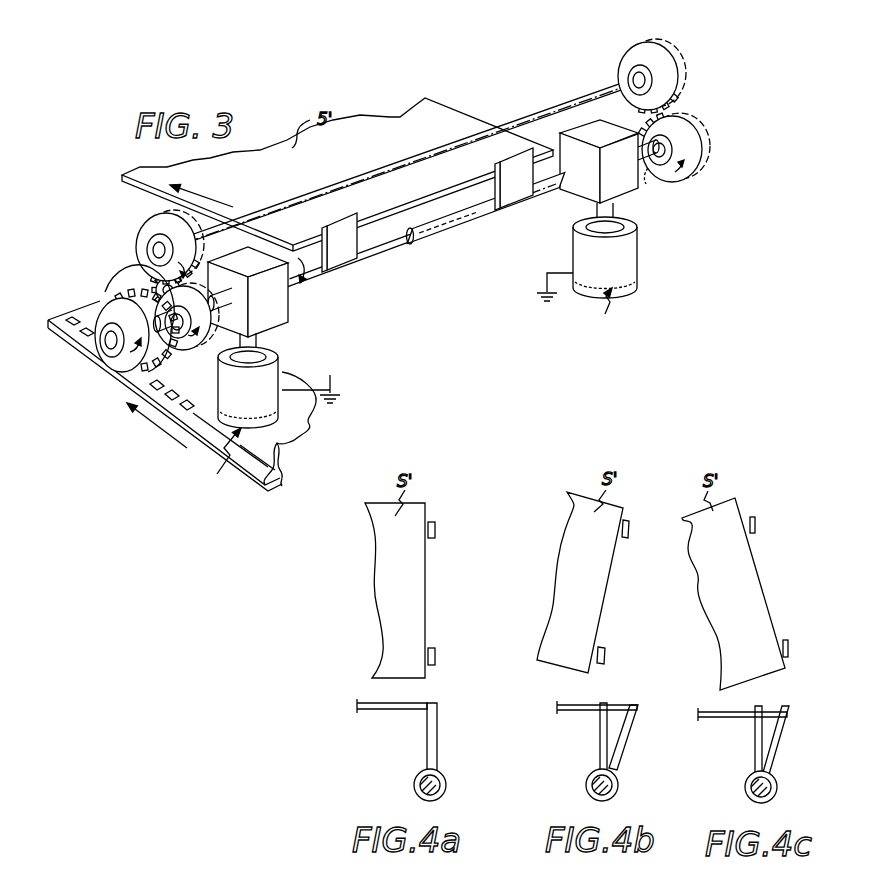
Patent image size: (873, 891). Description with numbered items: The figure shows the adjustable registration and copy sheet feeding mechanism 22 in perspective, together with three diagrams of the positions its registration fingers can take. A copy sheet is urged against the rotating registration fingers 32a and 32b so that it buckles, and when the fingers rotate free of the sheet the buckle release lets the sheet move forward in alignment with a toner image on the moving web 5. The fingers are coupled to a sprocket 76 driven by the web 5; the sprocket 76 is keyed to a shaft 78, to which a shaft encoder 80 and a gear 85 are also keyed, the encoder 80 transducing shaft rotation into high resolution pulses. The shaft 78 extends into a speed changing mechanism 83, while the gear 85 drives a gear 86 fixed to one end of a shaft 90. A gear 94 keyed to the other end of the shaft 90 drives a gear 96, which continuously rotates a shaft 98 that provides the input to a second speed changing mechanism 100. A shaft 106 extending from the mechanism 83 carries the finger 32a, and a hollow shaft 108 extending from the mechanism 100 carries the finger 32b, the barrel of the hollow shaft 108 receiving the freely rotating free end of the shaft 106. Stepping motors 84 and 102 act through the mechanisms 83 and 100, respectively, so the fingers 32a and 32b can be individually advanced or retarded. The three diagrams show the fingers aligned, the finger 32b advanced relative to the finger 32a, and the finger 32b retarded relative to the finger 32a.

In FIG. 3, the web 5 is at (278, 447).
In FIG. 3, the mechanism 22 is at (386, 311).
In FIG. 3, the registration finger 32a is at (347, 250).
In FIG. 4A, the registration finger 32a is at (439, 656).
In FIG. 4B, the registration finger 32a is at (610, 656).
In FIG. 4C, the registration finger 32a is at (792, 652).
In FIG. 3, the registration finger 32b is at (512, 190).
In FIG. 4A, the registration finger 32b is at (439, 528).
In FIG. 4B, the registration finger 32b is at (634, 528).
In FIG. 4C, the registration finger 32b is at (759, 526).
In FIG. 3, the sprocket 76 is at (115, 360).
In FIG. 3, the shaft 78 is at (85, 320).
In FIG. 3, the shaft encoder 80 is at (178, 338).
In FIG. 3, the speed changing mechanism 83 is at (284, 305).
In FIG. 3, the stepping motor 84 is at (293, 434).
In FIG. 3, the gear 85 is at (162, 293).
In FIG. 3, the gear 86 is at (146, 220).
In FIG. 3, the shaft 90 is at (543, 108).
In FIG. 3, the gear 94 is at (643, 44).
In FIG. 3, the gear 96 is at (698, 146).
In FIG. 3, the shaft 98 is at (650, 178).
In FIG. 3, the second speed changing mechanism 100 is at (627, 180).
In FIG. 3, the stepping motor 102 is at (626, 268).
In FIG. 3, the shaft 106 is at (398, 242).
In FIG. 3, the hollow shaft 108 is at (554, 196).